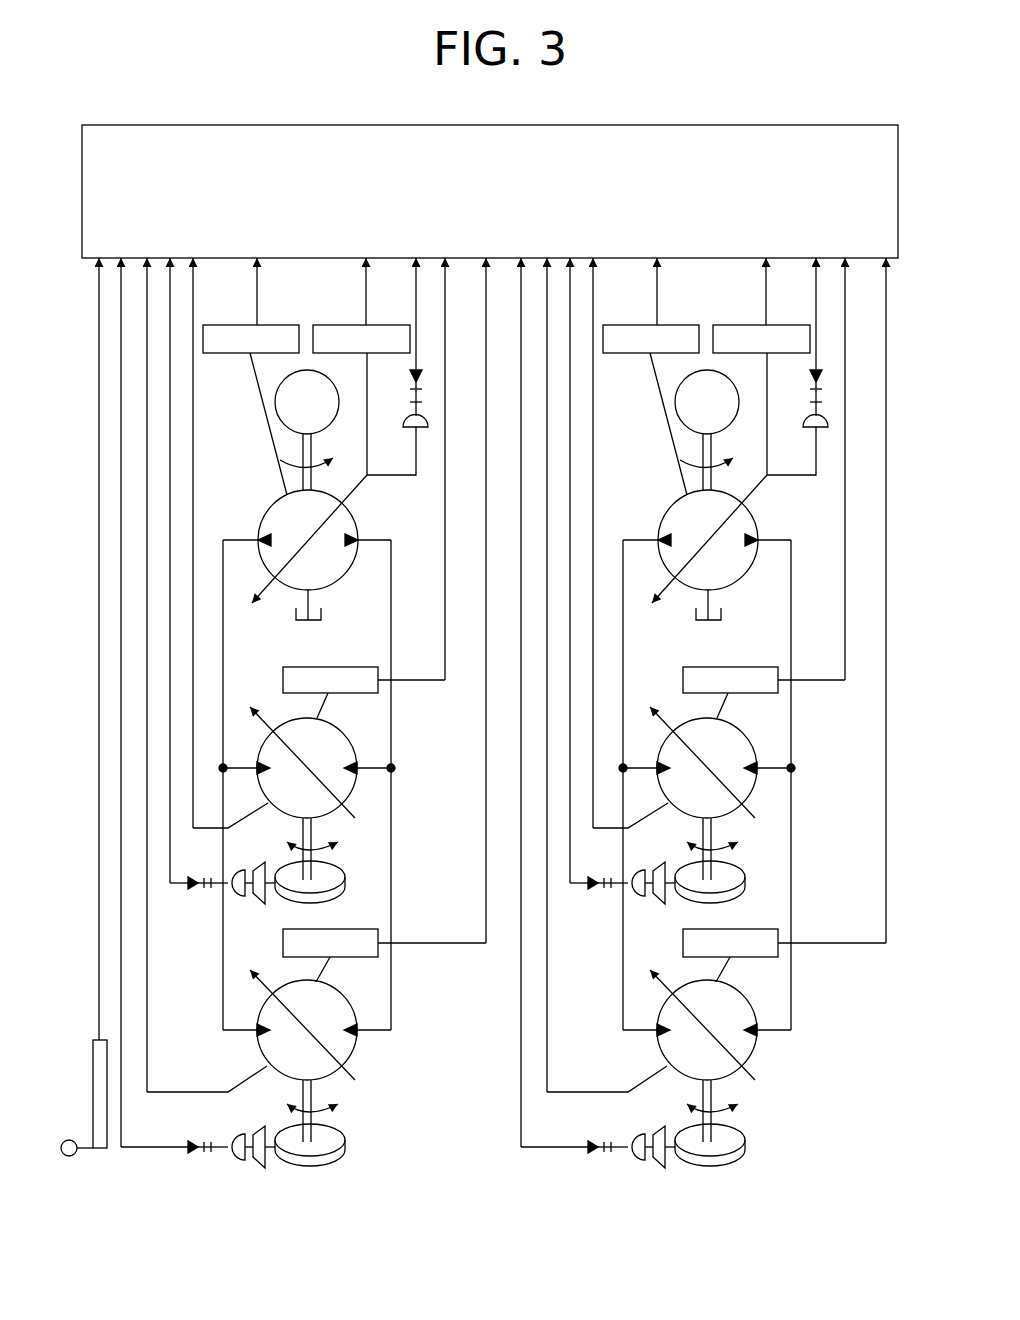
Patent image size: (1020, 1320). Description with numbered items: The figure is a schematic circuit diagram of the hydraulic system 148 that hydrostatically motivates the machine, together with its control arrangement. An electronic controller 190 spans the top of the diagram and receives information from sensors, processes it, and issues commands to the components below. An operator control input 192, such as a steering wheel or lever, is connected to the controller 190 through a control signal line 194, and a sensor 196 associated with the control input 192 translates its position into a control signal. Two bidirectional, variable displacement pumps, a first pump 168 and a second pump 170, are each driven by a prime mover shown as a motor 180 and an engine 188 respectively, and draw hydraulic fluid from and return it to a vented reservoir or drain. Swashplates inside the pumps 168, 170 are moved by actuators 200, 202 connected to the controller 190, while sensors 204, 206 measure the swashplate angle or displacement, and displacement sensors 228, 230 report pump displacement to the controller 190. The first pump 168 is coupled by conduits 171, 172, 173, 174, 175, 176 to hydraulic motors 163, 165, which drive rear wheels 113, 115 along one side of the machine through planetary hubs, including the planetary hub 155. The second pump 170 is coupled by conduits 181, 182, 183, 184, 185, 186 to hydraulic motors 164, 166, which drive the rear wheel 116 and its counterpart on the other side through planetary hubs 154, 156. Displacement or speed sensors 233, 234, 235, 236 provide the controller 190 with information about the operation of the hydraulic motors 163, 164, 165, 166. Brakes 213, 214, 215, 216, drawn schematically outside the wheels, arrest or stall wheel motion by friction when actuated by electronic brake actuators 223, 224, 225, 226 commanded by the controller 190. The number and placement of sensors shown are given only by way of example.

The electronic controller 190 is at (665, 137).
The hydraulic system 148 is at (447, 1147).
The control signal line 194 is at (97, 672).
The sensor 196 is at (92, 1075).
The control input 192 is at (69, 1158).
The displacement sensor 228 is at (253, 325).
The displacement sensor 230 is at (655, 376).
The sensor 204 is at (352, 325).
The sensor 206 is at (761, 366).
The actuator 200 is at (410, 428).
The actuator 202 is at (797, 366).
The electric motor 180 is at (300, 371).
The engine 188 is at (669, 429).
The first pump 168 is at (352, 512).
The second pump 170 is at (741, 539).
The conduit 171 is at (392, 600).
The conduit 181 is at (796, 785).
The conduit 174 is at (223, 660).
The conduit 184 is at (651, 785).
The conduit 175 is at (238, 765).
The conduit 185 is at (643, 720).
The conduit 172 is at (380, 775).
The conduit 182 is at (804, 779).
The conduit 176 is at (222, 977).
The conduit 186 is at (611, 1010).
The conduit 173 is at (392, 980).
The conduit 183 is at (813, 992).
The displacement or speed sensor 233 is at (375, 693).
The displacement or speed sensor 234 is at (767, 692).
The displacement or speed sensor 235 is at (375, 929).
The displacement or speed sensor 236 is at (767, 941).
The hydraulic motor 163 is at (352, 735).
The hydraulic motor 164 is at (752, 762).
The hydraulic motor 165 is at (352, 1052).
The hydraulic motor 166 is at (756, 1025).
The planetary hub 154 is at (763, 877).
The planetary hub 155 is at (313, 1094).
The planetary hub 156 is at (762, 1104).
The rear wheel 113 is at (345, 882).
The rear wheel 115 is at (345, 1148).
The rear wheel 116 is at (747, 1140).
The brake actuator 223 is at (235, 898).
The brake actuator 224 is at (616, 602).
The brake actuator 225 is at (233, 1162).
The brake actuator 226 is at (587, 731).
The brake 213 is at (258, 905).
The brake 214 is at (688, 893).
The brake 215 is at (258, 1168).
The brake 216 is at (696, 1165).